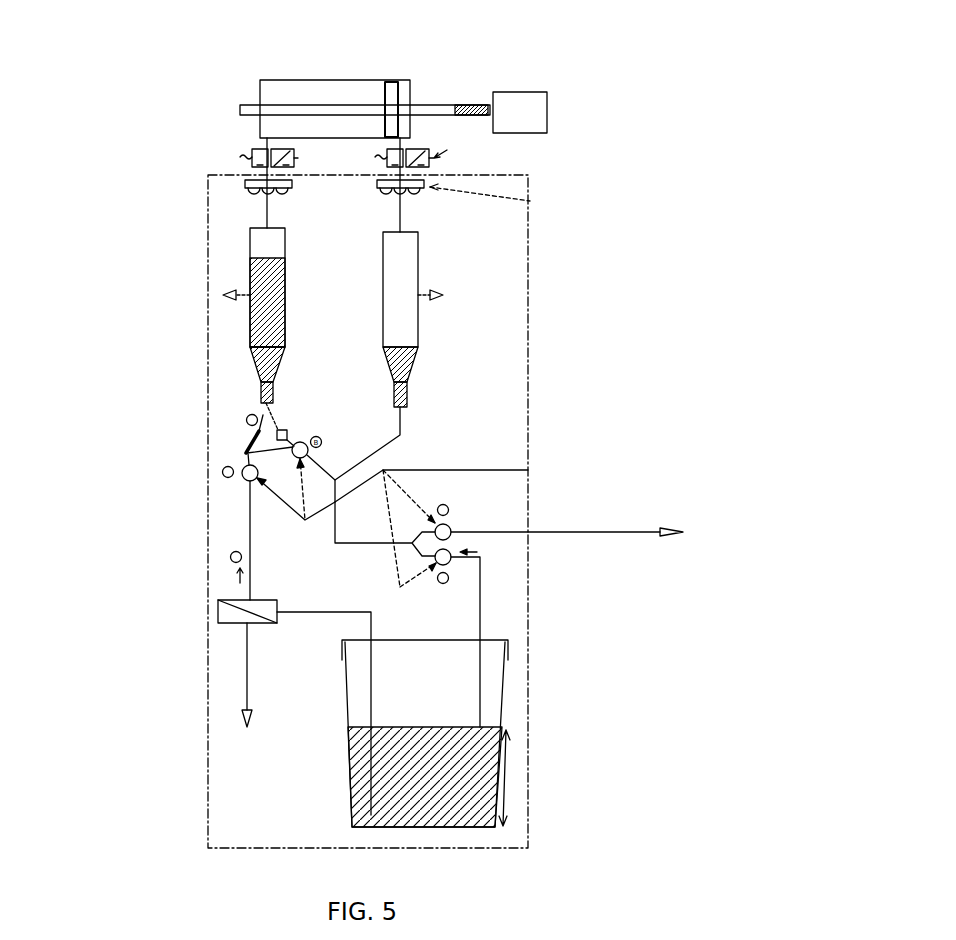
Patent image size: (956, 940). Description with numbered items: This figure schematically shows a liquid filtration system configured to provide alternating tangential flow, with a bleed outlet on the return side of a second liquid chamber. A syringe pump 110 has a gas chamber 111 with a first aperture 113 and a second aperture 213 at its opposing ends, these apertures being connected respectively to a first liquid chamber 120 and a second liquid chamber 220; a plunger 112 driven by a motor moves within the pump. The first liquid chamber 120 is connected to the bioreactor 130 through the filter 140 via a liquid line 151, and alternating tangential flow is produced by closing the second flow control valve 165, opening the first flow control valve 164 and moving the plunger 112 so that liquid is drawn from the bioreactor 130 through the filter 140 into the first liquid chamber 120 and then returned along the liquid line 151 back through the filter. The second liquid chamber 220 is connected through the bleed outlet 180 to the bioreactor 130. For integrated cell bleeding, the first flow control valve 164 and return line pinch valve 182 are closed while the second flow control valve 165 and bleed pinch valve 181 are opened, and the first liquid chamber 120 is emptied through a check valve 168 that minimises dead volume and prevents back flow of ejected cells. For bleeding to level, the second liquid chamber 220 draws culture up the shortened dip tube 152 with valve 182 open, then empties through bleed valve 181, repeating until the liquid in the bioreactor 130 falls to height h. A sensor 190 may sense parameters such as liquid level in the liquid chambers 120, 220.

The syringe pump 110 is at (368, 78).
The gas chamber 111 is at (275, 87).
The plunger 112 is at (393, 97).
The first aperture 113 is at (262, 133).
The second aperture 213 is at (403, 137).
The first liquid chamber 120 is at (231, 270).
The second liquid chamber 220 is at (436, 334).
The sensor 190 is at (447, 297).
The check valve 168 is at (243, 426).
The second flow control valve 165 is at (246, 453).
The first flow control valve 164 is at (216, 486).
The liquid line 151 is at (247, 530).
The bleed outlet 180 is at (527, 490).
The bleed pinch valve 181 is at (453, 527).
The return line pinch valve 182 is at (453, 560).
The dip tube 152 is at (477, 617).
The filter 140 is at (224, 643).
The bioreactor 130 is at (333, 790).